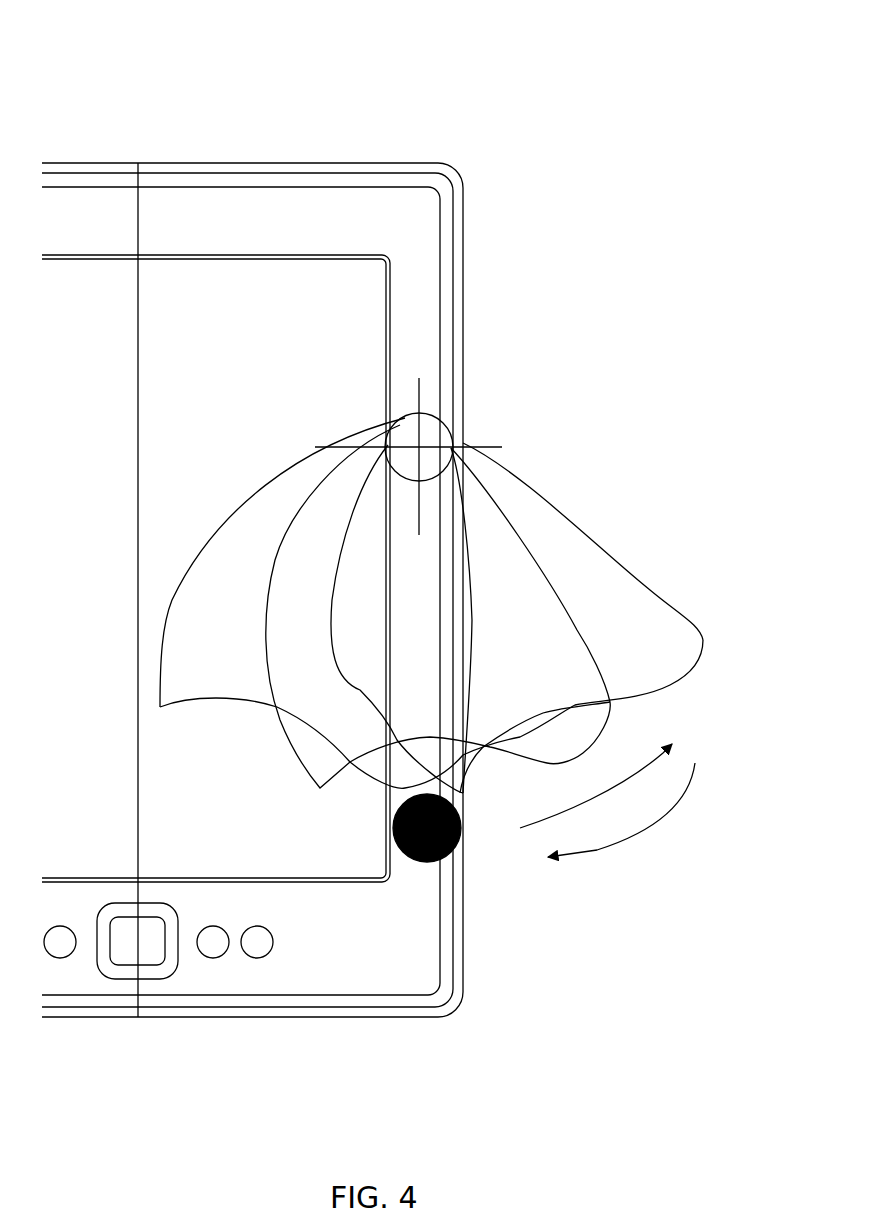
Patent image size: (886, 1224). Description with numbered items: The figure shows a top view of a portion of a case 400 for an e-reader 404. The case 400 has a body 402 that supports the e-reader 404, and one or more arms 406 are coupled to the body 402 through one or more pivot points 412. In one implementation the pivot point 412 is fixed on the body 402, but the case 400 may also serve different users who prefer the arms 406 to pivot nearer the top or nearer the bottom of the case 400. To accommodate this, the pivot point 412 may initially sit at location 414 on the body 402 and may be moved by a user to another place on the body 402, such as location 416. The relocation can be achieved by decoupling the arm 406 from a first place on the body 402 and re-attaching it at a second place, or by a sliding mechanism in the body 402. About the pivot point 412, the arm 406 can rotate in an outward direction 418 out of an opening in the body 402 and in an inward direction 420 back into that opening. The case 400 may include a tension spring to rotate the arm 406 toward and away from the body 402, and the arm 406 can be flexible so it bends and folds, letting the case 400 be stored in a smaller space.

The case 400 is at (768, 50).
The body 402 is at (457, 168).
The e-reader 404 is at (84, 206).
The arms 406 is at (680, 652).
The pivot point 412 is at (428, 410).
The location 414 is at (424, 446).
The location 416 is at (442, 858).
The outward direction 418 is at (596, 772).
The inward direction 420 is at (621, 824).